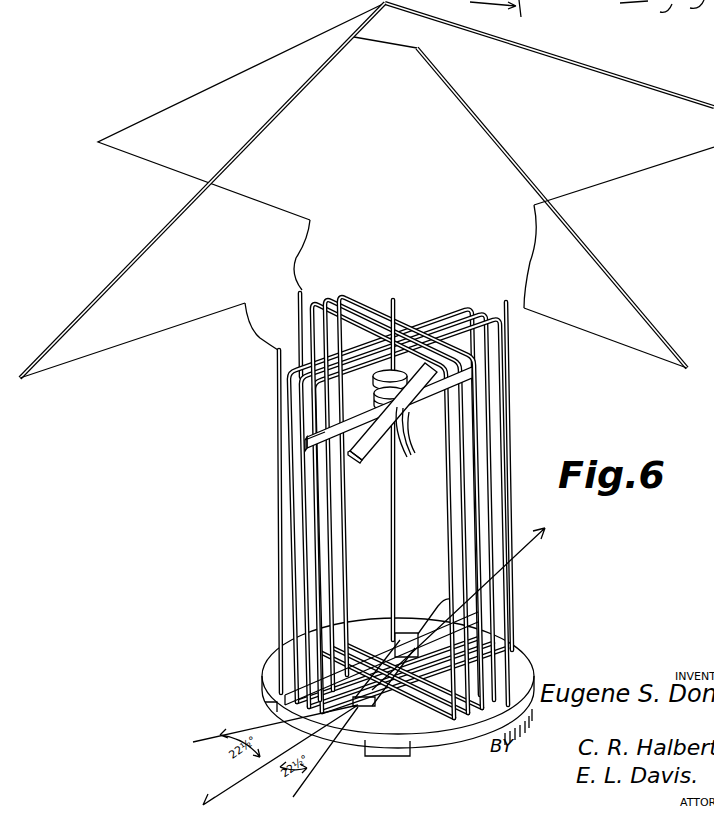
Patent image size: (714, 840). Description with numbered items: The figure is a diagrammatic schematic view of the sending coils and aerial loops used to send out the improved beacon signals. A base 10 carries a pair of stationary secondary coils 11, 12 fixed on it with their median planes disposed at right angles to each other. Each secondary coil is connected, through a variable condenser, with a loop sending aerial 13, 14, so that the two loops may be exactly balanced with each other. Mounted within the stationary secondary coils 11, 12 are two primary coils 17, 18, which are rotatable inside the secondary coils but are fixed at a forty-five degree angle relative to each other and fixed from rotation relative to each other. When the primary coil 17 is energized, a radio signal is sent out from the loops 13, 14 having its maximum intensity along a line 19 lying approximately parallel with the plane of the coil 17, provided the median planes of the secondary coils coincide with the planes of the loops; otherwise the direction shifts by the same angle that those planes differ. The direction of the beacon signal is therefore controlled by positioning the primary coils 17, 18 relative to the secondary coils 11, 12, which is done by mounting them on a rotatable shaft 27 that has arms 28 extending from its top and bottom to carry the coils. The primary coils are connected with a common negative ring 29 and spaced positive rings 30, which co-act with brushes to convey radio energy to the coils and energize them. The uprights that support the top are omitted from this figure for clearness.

The base 10 is at (522, 660).
The secondary coil 11 is at (340, 297).
The secondary coil 12 is at (456, 302).
The loop sending aerial 13 is at (255, 70).
The loop sending aerial 14 is at (118, 280).
The primary coil 17 is at (372, 452).
The primary coil 18 is at (352, 420).
The line of maximum signal intensity 19 is at (531, 6).
The rotatable shaft 27 is at (393, 588).
The arms 28 is at (427, 607).
The common negative ring 29 is at (397, 380).
The positive rings 30 is at (401, 442).